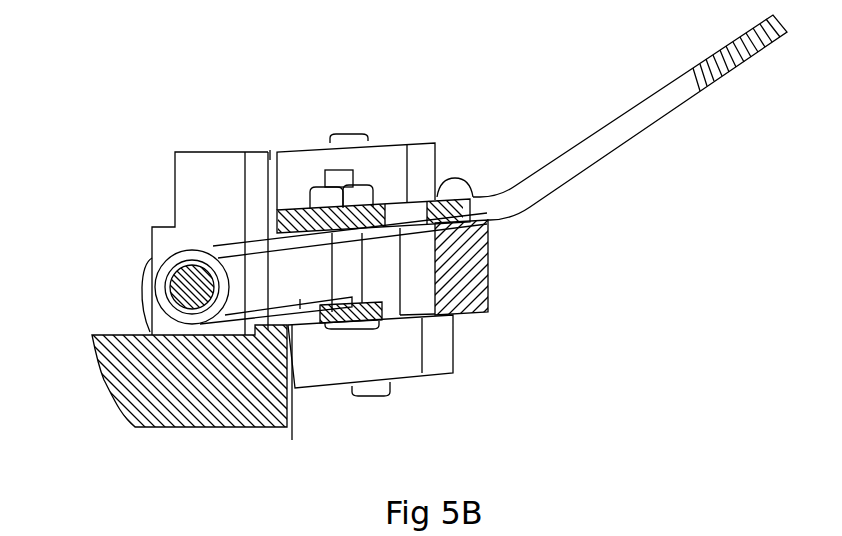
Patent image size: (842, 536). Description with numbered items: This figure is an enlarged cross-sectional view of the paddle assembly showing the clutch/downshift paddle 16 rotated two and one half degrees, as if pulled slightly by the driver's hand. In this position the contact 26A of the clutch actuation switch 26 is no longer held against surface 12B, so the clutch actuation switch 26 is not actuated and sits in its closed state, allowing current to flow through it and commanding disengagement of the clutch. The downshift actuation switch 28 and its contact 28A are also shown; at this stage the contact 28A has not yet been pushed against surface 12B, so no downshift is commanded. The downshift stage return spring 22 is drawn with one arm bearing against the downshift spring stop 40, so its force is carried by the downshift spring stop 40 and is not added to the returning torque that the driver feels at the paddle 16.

The surface 12B is at (270, 212).
The clutch/downshift paddle 16 is at (573, 163).
The downshift stage return spring 22 is at (303, 310).
The clutch actuation switch 26 is at (383, 163).
The contact 26A is at (270, 150).
The downshift actuation switch 28 is at (413, 360).
The contact 28A is at (293, 404).
The downshift spring stop 40 is at (370, 310).